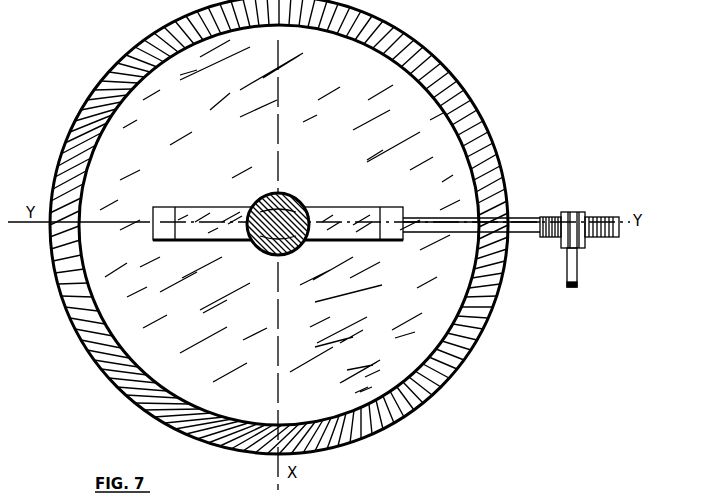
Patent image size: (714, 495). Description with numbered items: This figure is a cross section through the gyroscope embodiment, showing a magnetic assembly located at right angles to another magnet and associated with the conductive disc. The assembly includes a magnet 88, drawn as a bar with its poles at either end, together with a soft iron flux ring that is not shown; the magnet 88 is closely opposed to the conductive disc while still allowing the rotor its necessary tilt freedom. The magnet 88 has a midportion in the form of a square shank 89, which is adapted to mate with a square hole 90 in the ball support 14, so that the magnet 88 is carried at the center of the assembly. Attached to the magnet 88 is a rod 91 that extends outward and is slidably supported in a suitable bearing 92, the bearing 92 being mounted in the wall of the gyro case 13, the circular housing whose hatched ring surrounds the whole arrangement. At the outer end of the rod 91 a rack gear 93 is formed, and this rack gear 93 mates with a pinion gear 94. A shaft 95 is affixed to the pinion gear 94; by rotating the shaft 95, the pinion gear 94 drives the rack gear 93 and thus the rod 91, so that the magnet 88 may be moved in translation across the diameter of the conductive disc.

The gyro case 13 is at (417, 67).
The ball support 14 is at (291, 199).
The magnet 88 is at (343, 213).
The square shank 89 is at (242, 212).
The square hole 90 is at (293, 245).
The rod 91 is at (437, 233).
The bearing 92 is at (501, 219).
The rack gear 93 is at (549, 217).
The pinion gear 94 is at (587, 219).
The shaft 95 is at (578, 268).